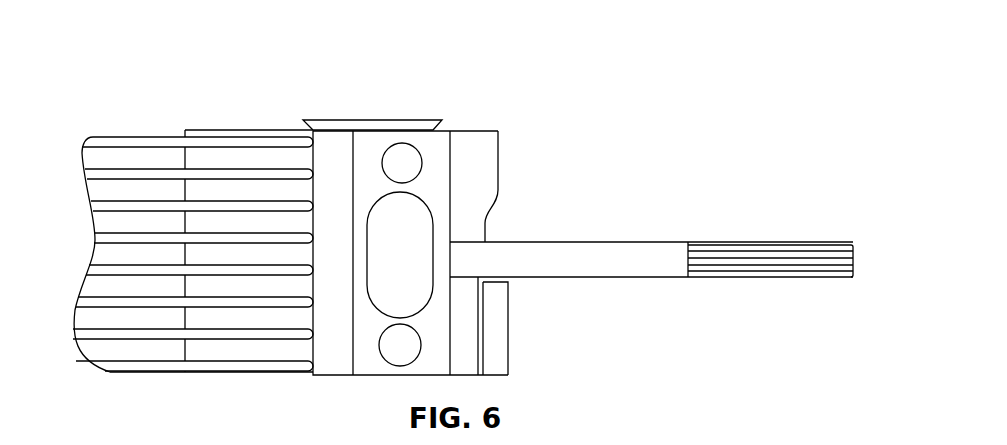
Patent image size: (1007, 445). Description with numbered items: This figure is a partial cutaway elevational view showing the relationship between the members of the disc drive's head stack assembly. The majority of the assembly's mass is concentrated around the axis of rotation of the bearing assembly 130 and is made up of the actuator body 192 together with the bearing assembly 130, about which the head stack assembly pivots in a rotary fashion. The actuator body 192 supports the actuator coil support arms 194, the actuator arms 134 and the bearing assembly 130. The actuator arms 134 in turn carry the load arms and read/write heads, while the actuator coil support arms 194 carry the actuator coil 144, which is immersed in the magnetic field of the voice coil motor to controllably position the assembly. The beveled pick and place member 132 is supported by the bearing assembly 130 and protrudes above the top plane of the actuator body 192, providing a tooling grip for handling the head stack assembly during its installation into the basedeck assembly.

The bearing assembly 130 is at (338, 118).
The beveled pick and place member 132 is at (410, 128).
The actuator arms 134 is at (147, 135).
The actuator coil 144 is at (845, 245).
The actuator body 192 is at (478, 167).
The actuator coil support arms 194 is at (590, 263).